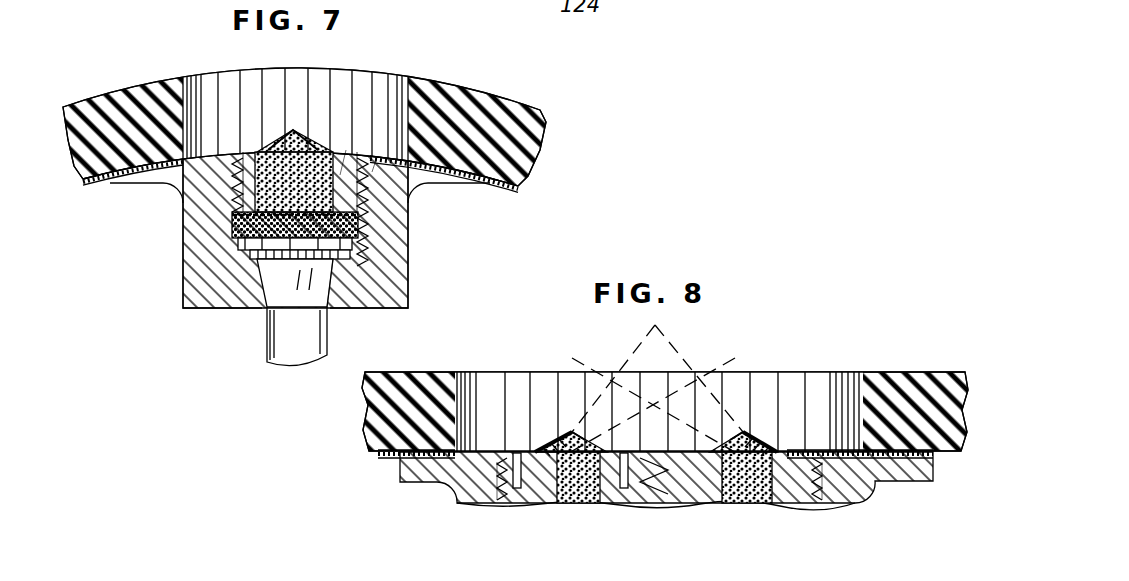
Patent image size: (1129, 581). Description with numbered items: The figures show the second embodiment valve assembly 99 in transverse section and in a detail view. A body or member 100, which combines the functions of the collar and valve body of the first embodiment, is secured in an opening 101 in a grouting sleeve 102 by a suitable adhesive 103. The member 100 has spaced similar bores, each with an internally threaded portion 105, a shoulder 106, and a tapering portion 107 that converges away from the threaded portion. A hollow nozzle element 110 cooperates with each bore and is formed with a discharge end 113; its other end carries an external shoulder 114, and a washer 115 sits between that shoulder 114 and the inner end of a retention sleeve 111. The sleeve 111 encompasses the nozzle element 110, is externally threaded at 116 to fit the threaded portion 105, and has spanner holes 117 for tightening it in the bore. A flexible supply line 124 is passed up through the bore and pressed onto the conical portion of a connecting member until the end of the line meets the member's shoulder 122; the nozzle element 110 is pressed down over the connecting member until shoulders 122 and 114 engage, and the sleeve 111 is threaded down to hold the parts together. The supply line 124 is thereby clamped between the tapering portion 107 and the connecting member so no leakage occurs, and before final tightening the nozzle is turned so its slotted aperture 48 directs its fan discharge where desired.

In FIG. 7, the slotted aperture 48 is at (303, 143).
In FIG. 8, the slotted aperture 48 is at (585, 448).
In FIG. 7, the valve assembly 99 is at (174, 315).
In FIG. 8, the valve assembly 99 is at (477, 528).
In FIG. 7, the body or member 100 is at (193, 290).
In FIG. 8, the body or member 100 is at (458, 508).
In FIG. 7, the opening 101 is at (191, 82).
In FIG. 8, the opening 101 is at (458, 385).
In FIG. 7, the grouting sleeve 102 is at (92, 102).
In FIG. 8, the grouting sleeve 102 is at (454, 372).
In FIG. 7, the adhesive 103 is at (118, 178).
In FIG. 8, the adhesive 103 is at (387, 466).
In FIG. 7, the internally threaded portion 105 is at (365, 232).
In FIG. 8, the internally threaded portion 105 is at (510, 508).
In FIG. 7, the shoulder 106 is at (350, 268).
In FIG. 7, the tapering portion 107 is at (268, 280).
In FIG. 7, the hollow nozzle element 110 is at (269, 138).
In FIG. 8, the hollow nozzle element 110 is at (551, 434).
In FIG. 7, the sleeve 111 is at (346, 150).
In FIG. 7, the discharge end 113 is at (284, 143).
In FIG. 8, the discharge end 113 is at (563, 435).
In FIG. 7, the shoulder 114 is at (240, 240).
In FIG. 7, the washer 115 is at (233, 212).
In FIG. 7, the external threads 116 is at (377, 160).
In FIG. 8, the external threads 116 is at (497, 473).
In FIG. 8, the spanner holes 117 is at (518, 454).
In FIG. 7, the shoulder 122 is at (248, 253).
In FIG. 7, the supply line 124 is at (273, 345).